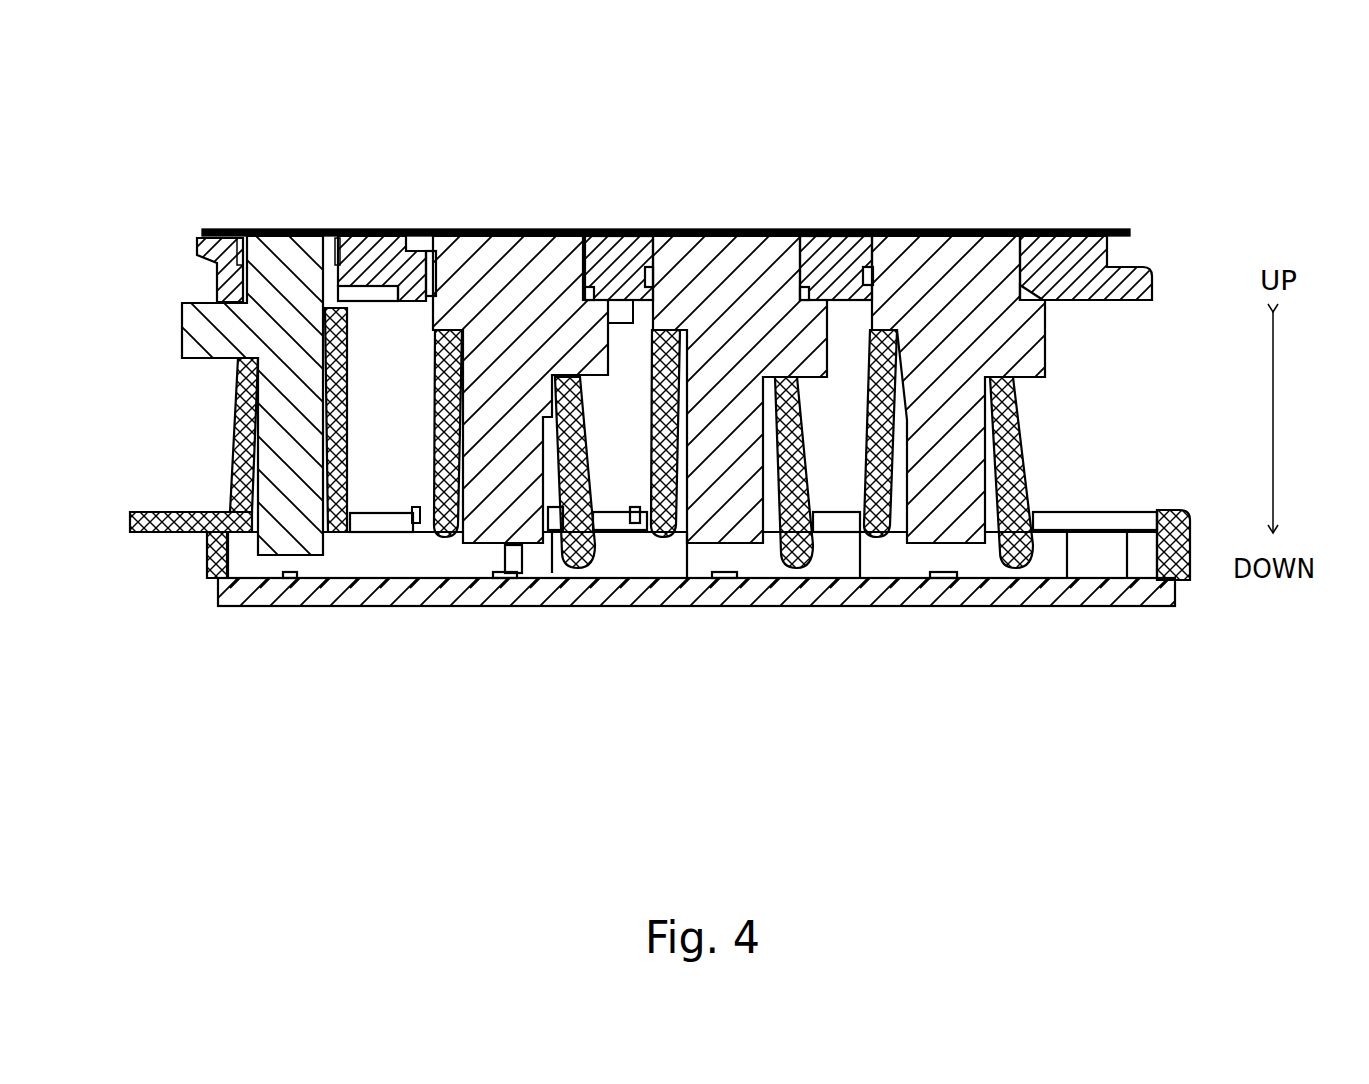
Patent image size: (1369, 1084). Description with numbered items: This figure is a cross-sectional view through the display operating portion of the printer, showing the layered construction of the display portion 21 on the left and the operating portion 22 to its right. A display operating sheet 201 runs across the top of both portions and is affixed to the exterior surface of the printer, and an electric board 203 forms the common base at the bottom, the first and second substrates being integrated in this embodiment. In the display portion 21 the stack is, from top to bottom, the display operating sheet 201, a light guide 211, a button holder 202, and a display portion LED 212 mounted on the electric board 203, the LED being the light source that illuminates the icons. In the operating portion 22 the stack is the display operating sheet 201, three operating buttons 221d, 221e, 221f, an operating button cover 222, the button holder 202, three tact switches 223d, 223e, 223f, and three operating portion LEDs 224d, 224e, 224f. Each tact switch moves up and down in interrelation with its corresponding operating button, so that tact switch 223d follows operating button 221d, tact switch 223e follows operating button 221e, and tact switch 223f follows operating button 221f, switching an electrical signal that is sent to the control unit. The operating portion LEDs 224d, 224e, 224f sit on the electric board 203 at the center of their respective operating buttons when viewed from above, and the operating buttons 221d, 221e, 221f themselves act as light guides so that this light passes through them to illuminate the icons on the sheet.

The display operating sheet 201 is at (240, 228).
The button holder 202 is at (200, 245).
The electric board 203 is at (243, 607).
The display portion 21 is at (686, 478).
The light guide 211 is at (316, 228).
The display portion LED 212 is at (313, 607).
The operating portion 22 is at (769, 467).
The operating button 221d is at (524, 228).
The operating button 221e is at (742, 228).
The operating button 221f is at (912, 228).
The operating button cover 222 is at (1080, 238).
The tact switch 223d is at (567, 607).
The tact switch 223e is at (787, 607).
The tact switch 223f is at (1005, 607).
The operating portion LED 224d is at (490, 607).
The operating portion LED 224e is at (710, 607).
The operating portion LED 224f is at (930, 607).